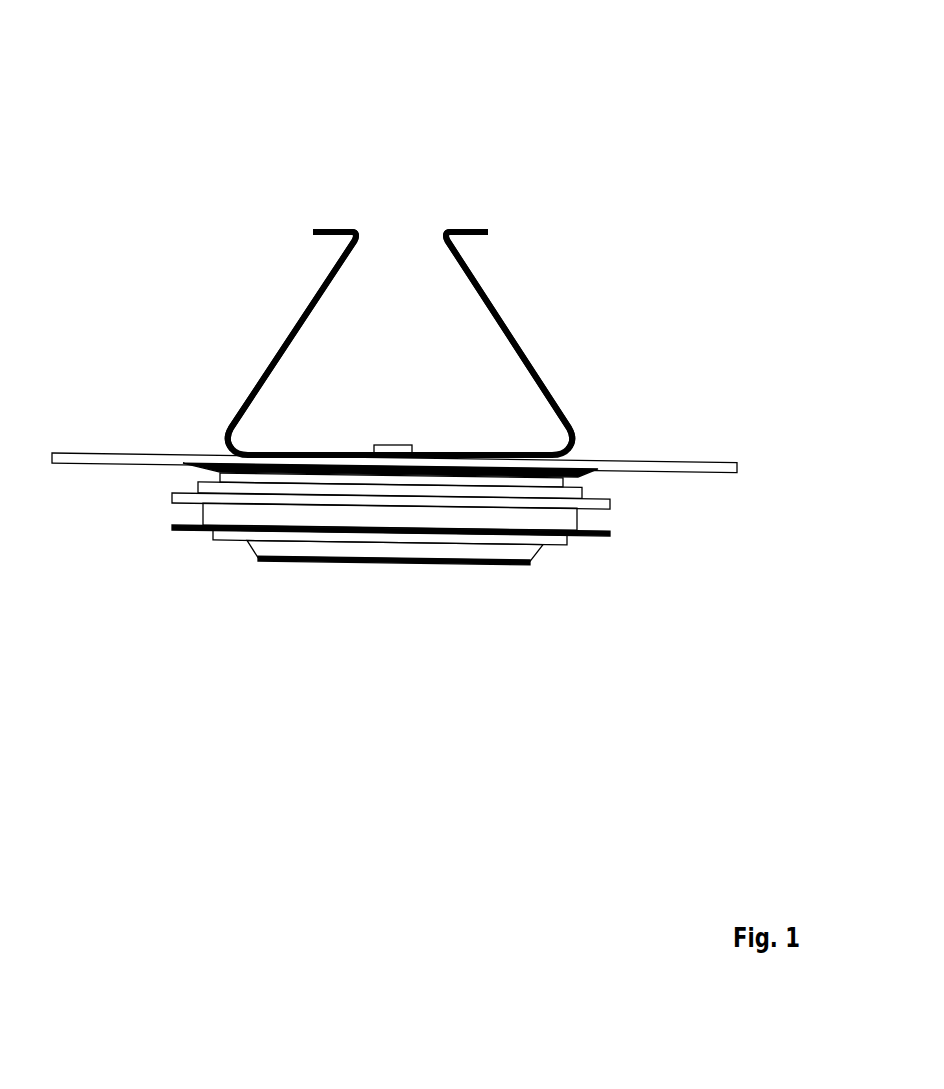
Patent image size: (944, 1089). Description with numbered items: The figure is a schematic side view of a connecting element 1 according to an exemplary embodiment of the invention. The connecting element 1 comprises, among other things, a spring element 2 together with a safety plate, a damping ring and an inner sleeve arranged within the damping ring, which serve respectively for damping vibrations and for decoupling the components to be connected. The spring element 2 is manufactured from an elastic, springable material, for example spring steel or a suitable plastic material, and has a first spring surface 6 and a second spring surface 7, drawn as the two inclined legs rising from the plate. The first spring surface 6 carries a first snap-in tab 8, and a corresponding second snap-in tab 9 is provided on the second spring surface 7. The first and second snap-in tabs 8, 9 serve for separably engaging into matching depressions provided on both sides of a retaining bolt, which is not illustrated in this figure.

The connecting element 1 is at (408, 130).
The spring element 2 is at (497, 170).
The first spring surface 6 is at (307, 307).
The second spring surface 7 is at (493, 307).
The first snap-in tab 8 is at (358, 236).
The second snap-in tab 9 is at (444, 238).